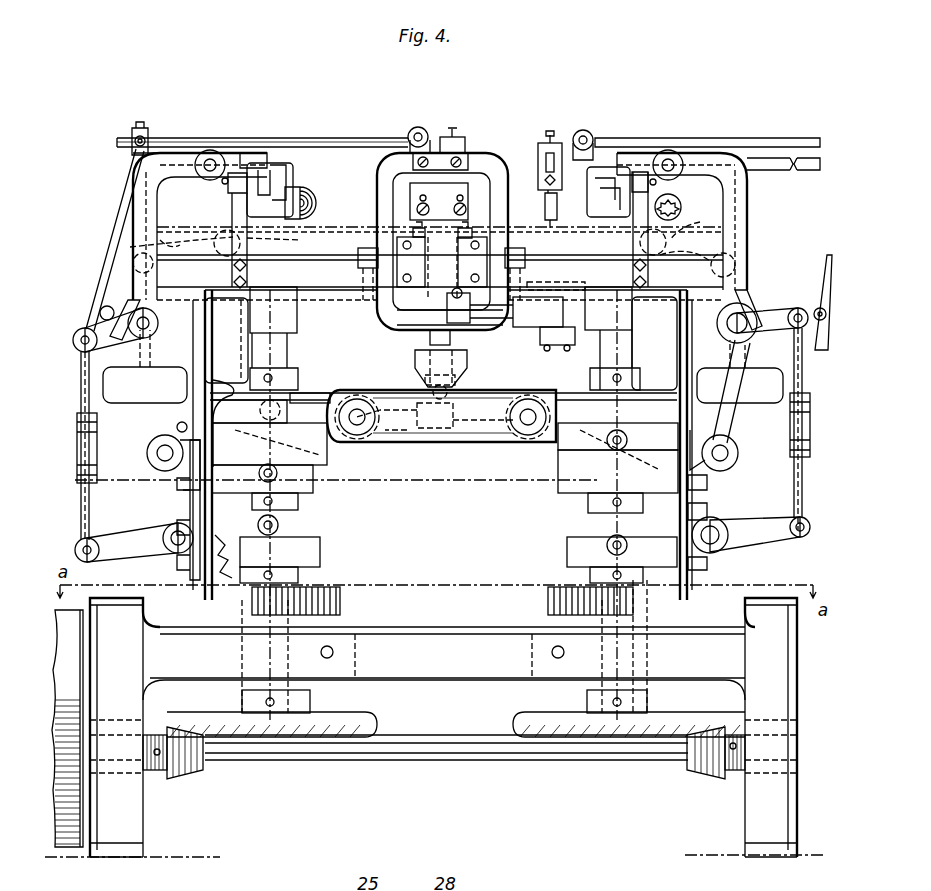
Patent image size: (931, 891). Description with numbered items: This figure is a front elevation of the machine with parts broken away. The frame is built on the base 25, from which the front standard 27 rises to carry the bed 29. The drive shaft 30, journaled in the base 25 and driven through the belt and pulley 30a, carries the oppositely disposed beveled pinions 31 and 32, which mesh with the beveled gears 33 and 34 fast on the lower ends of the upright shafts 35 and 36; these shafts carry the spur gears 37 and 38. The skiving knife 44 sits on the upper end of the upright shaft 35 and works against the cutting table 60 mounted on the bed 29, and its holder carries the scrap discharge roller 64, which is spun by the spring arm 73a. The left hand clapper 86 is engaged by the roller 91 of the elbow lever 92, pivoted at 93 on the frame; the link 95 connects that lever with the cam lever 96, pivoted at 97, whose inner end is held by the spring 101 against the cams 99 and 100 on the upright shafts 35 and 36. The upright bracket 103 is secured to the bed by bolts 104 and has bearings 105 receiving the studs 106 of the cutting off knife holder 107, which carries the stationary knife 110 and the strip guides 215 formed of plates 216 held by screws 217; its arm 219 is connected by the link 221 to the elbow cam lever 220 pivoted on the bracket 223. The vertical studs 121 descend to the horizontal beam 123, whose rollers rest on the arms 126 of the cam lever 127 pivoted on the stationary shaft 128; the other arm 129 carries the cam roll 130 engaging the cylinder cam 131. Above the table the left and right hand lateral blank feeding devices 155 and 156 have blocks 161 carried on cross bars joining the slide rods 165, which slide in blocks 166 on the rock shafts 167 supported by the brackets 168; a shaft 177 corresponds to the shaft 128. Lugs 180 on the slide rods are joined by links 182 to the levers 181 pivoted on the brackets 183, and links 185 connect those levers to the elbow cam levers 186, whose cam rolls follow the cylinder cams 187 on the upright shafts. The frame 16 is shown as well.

The left hand lateral blank feeding device 155 is at (388, 135).
The link 182 is at (323, 137).
The right hand lateral blank feeding device 156 is at (635, 135).
The lug 180 is at (413, 130).
The slide rod 165 is at (135, 164).
The bracket 168 is at (160, 152).
The rock shaft 167 is at (212, 163).
The block 166 is at (256, 153).
The spring arm 73a is at (260, 165).
The scrap discharge roller 64 is at (313, 197).
The block 161 is at (540, 142).
The stud 106 is at (445, 137).
The bearing 105 is at (470, 152).
The upright bracket 103 is at (480, 150).
The stationary knife 110 is at (439, 201).
The strip guide 215 is at (455, 229).
The plate 216 is at (480, 230).
The bolt 104 is at (377, 246).
The screw 217 is at (438, 262).
The arm 219 is at (440, 268).
The cutting off knife holder 107 is at (423, 310).
The frame 16 is at (397, 303).
The vertical stud 121 is at (450, 328).
The elbow cam lever 220 is at (542, 345).
The bracket 223 is at (535, 285).
The link 221 is at (573, 298).
The roller 91 is at (705, 268).
The cutting table 60 is at (700, 217).
The skiving knife 44 is at (230, 200).
The left hand clapper 86 is at (170, 227).
The link 185 is at (127, 297).
The lever 181 is at (115, 227).
The elbow lever 92 is at (85, 330).
The pivot 93 is at (145, 340).
The bracket 183 is at (443, 366).
The cylinder cam 131 is at (177, 423).
The elbow cam lever 186 is at (153, 443).
The link 95 is at (83, 516).
The cam lever 96 is at (110, 537).
The pivot 97 is at (176, 536).
The bed 29 is at (288, 310).
The cam roll 130 is at (226, 340).
The upright shaft 35 is at (278, 345).
The upright shaft 36 is at (620, 355).
The arm 129 is at (322, 400).
The front standard 27 is at (473, 435).
The stationary shaft 128 is at (358, 425).
The shaft 177 is at (528, 424).
The arm 126 is at (443, 428).
The cam lever 127 is at (407, 432).
The cylinder cam 187 is at (327, 492).
The spring 101 is at (278, 530).
The cam 99 is at (320, 543).
The cam 100 is at (567, 540).
The spur gear 37 is at (323, 583).
The spur gear 38 is at (580, 583).
The base 25 is at (447, 646).
The drive shaft 30 is at (450, 760).
The beveled gear 33 is at (373, 716).
The beveled gear 34 is at (513, 716).
The beveled pinion 31 is at (187, 780).
The beveled pinion 32 is at (703, 770).
The belt and pulley 30a is at (72, 843).
The horizontal beam 123 is at (415, 378).